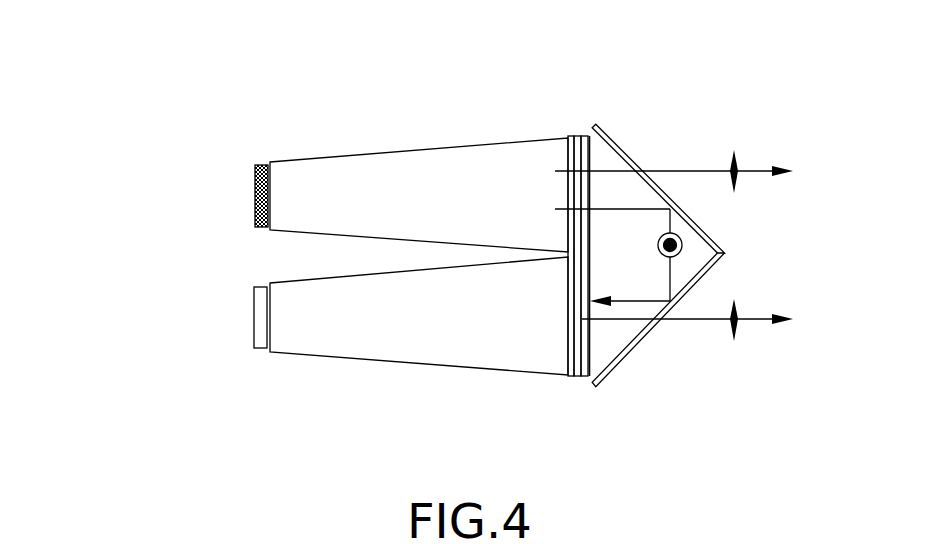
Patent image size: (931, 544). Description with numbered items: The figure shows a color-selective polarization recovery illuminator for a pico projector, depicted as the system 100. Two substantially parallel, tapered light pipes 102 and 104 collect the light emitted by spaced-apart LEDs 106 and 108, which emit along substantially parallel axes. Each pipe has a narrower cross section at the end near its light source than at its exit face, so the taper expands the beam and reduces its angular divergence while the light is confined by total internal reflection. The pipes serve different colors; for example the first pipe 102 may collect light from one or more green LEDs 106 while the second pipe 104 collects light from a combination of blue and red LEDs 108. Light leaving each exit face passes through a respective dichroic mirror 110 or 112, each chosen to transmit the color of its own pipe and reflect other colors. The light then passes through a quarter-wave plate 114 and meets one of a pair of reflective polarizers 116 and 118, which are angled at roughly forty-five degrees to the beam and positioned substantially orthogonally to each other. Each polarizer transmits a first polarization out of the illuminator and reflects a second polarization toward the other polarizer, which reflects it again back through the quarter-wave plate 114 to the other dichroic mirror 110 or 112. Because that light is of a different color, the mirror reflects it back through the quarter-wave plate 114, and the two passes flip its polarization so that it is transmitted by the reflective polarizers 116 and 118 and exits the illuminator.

The system 100 is at (172, 151).
The first tapered light pipe 102 is at (475, 168).
The second tapered light pipe 104 is at (410, 345).
The first LED 106 is at (255, 190).
The second LED 108 is at (254, 310).
The first dichroic mirror 110 is at (578, 135).
The second dichroic mirror 112 is at (576, 378).
The quarter-wave plate 114 is at (593, 385).
The first reflective polarizer 116 is at (625, 150).
The second reflective polarizer 118 is at (648, 340).